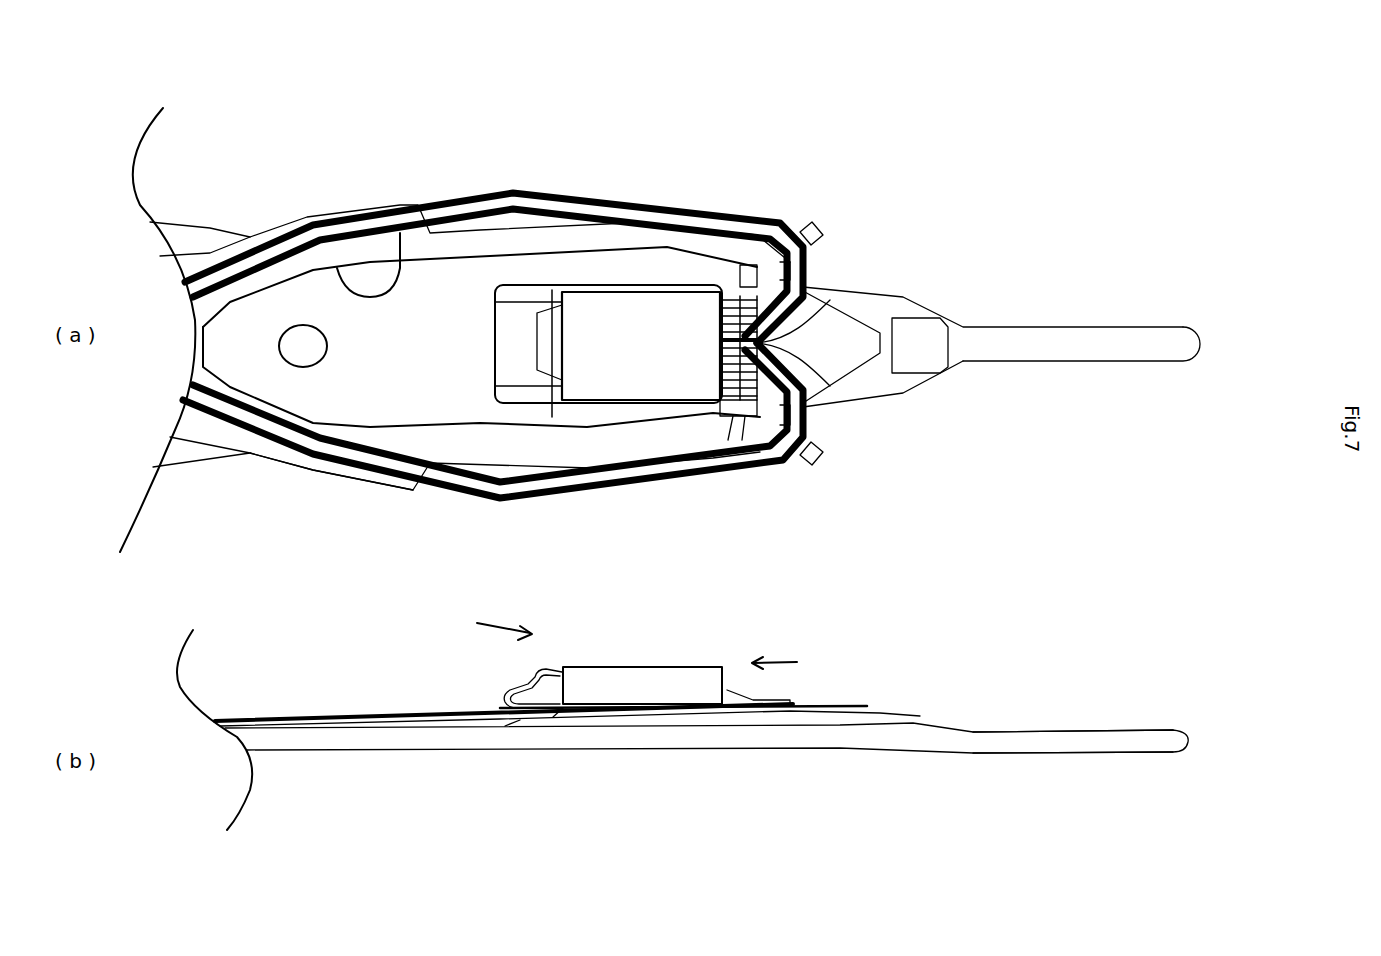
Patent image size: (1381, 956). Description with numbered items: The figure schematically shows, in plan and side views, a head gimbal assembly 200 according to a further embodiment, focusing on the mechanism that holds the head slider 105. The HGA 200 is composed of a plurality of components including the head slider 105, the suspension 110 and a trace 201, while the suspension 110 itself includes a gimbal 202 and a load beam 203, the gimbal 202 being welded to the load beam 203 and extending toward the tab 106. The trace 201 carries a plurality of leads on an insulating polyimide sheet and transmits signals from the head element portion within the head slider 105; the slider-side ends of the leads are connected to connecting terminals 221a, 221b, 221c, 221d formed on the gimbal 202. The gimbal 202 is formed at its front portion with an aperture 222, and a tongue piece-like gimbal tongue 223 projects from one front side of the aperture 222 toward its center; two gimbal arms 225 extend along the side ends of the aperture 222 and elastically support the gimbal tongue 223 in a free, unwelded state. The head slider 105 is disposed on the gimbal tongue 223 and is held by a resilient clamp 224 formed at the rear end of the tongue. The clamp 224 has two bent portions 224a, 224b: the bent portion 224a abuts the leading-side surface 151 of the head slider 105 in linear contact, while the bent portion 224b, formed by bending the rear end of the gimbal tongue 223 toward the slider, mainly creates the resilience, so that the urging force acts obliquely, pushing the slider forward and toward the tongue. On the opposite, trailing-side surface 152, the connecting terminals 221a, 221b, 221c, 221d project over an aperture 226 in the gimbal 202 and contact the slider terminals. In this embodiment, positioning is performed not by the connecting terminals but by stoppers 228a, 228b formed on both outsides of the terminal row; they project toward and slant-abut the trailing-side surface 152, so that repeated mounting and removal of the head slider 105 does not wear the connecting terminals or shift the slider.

The head gimbal assembly 200 is at (832, 143).
The trace 201 is at (577, 193).
The aperture 222 is at (400, 233).
The gimbal tongue 223 is at (528, 283).
The resilient clamp 224 is at (505, 370).
The bent portion 224a is at (563, 717).
The bent portion 224b is at (507, 730).
The gimbal arm 225 is at (472, 458).
The leading-side surface 151 is at (553, 380).
The trailing-side surface 152 is at (735, 430).
The head slider 105 is at (660, 292).
The connecting terminal 221a is at (740, 268).
The connecting terminal 221b is at (800, 296).
The connecting terminal 221c is at (807, 407).
The connecting terminal 221d is at (787, 468).
The aperture 226 is at (745, 420).
The stopper 228a is at (807, 250).
The stopper 228b is at (723, 430).
The gimbal 202 is at (870, 377).
The load beam 203 is at (937, 377).
The suspension 110 is at (1070, 452).
The tab 106 is at (1082, 327).